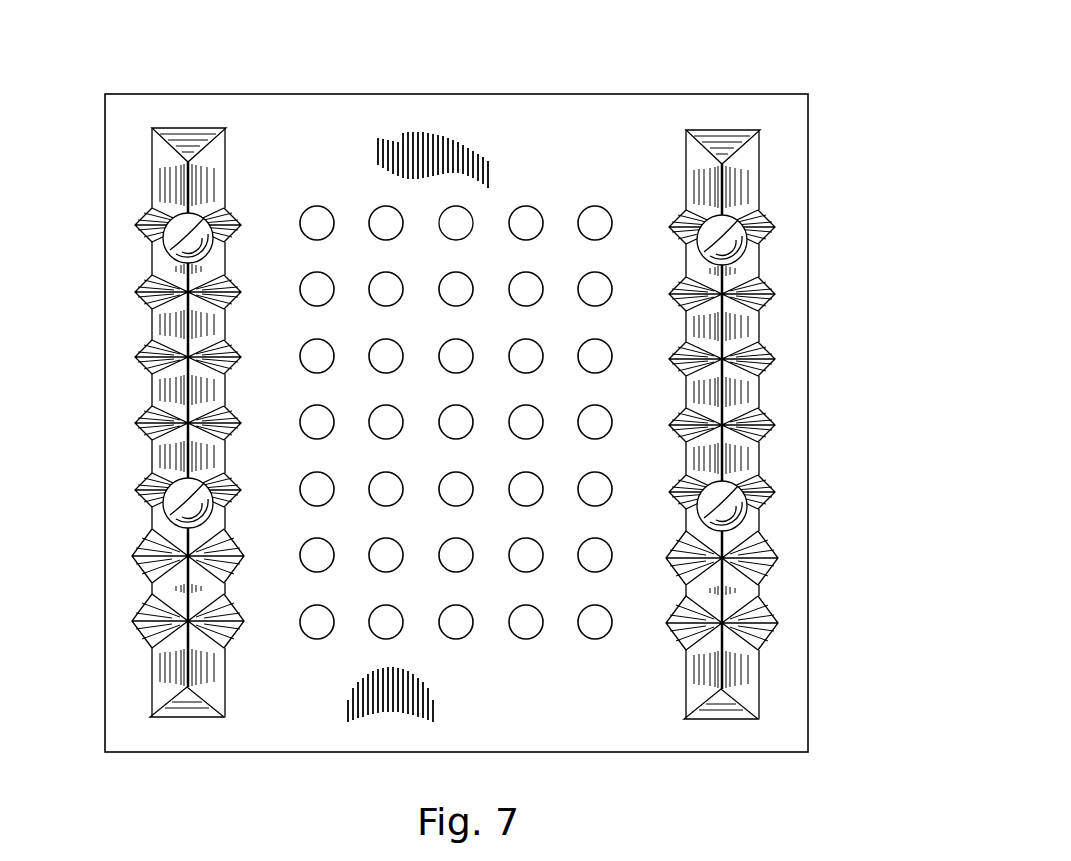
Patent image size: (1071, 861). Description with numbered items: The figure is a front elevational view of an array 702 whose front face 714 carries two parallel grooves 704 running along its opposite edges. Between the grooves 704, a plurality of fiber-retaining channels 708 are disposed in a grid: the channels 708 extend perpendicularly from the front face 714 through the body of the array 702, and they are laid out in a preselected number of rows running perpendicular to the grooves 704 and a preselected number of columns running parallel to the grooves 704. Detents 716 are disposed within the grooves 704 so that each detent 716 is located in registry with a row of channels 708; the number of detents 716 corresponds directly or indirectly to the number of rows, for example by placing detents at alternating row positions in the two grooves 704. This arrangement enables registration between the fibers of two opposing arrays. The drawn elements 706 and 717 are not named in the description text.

The array 702 is at (646, 70).
The groove 704 is at (743, 672).
The ball 706 is at (763, 265).
The fiber-retaining channel 708 is at (475, 220).
The front face 714 is at (587, 709).
The detent 716 is at (142, 484).
The node 717 is at (133, 553).